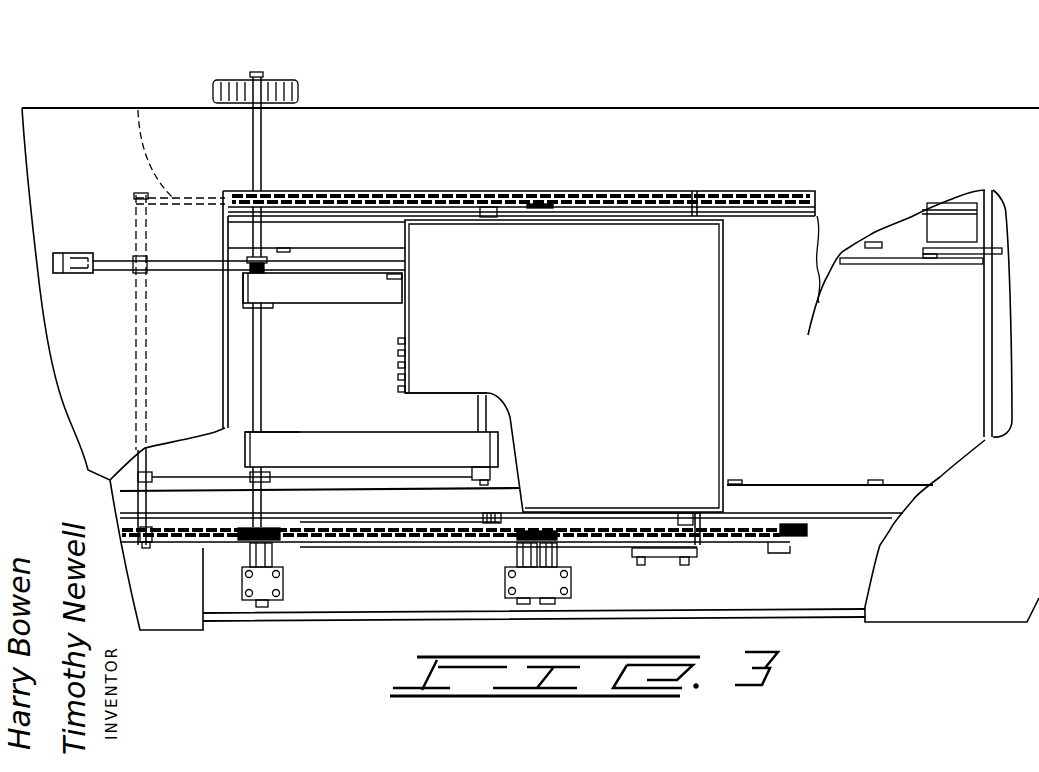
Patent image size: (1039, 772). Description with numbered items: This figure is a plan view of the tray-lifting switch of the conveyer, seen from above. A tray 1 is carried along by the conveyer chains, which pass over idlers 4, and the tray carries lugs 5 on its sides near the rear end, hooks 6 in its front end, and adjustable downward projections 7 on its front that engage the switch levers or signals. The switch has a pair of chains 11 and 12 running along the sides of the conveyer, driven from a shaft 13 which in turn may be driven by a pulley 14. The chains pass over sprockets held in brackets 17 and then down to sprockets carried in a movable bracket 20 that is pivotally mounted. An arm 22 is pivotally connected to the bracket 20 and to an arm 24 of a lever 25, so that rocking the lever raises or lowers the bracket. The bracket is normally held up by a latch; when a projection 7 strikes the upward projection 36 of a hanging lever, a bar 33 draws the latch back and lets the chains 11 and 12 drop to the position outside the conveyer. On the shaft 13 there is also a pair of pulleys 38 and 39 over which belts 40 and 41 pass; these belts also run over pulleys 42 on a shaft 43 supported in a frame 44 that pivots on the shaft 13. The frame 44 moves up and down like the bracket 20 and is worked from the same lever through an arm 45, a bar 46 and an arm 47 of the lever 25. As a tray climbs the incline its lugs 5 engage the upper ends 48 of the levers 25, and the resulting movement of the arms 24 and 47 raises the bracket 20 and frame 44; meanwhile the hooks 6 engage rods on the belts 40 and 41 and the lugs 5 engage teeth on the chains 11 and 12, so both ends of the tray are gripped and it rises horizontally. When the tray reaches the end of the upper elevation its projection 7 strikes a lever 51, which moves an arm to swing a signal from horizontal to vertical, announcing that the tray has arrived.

The tray 1 is at (580, 262).
The idler 4 is at (883, 482).
The lug 5 is at (695, 192).
The hook 6 is at (390, 283).
The projection 7 is at (397, 350).
The chain 11 is at (462, 537).
The chain 12 is at (503, 193).
The shaft 13 is at (260, 80).
The pulley 14 is at (227, 82).
The bracket 17 is at (555, 560).
The movable bracket 20 is at (753, 547).
The arm 22 is at (663, 555).
The arm 24 is at (610, 520).
The lever 25 is at (495, 525).
The bar 33 is at (888, 262).
The projection 36 is at (935, 255).
The pulley 38 is at (277, 432).
The pulley 39 is at (248, 310).
The belt 40 is at (330, 437).
The belt 41 is at (340, 295).
The pulley 42 is at (472, 428).
The shaft 43 is at (477, 397).
The frame 44 is at (330, 262).
The arm 45 is at (180, 272).
The bar 46 is at (139, 110).
The arm 47 is at (348, 522).
The upper end 48 is at (550, 207).
The lever 51 is at (95, 257).